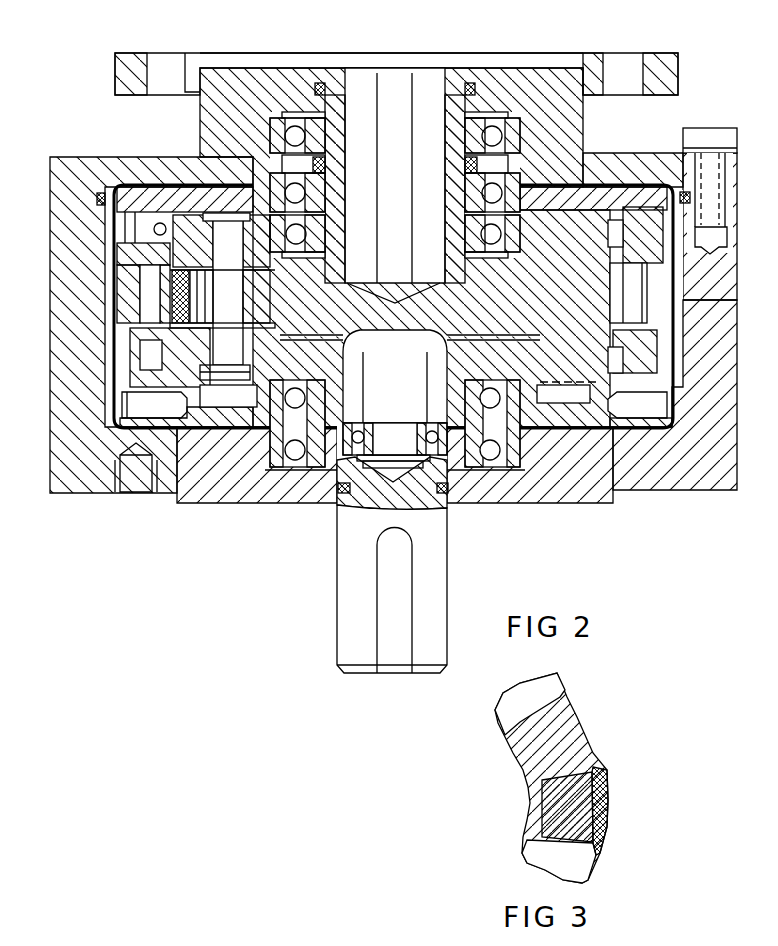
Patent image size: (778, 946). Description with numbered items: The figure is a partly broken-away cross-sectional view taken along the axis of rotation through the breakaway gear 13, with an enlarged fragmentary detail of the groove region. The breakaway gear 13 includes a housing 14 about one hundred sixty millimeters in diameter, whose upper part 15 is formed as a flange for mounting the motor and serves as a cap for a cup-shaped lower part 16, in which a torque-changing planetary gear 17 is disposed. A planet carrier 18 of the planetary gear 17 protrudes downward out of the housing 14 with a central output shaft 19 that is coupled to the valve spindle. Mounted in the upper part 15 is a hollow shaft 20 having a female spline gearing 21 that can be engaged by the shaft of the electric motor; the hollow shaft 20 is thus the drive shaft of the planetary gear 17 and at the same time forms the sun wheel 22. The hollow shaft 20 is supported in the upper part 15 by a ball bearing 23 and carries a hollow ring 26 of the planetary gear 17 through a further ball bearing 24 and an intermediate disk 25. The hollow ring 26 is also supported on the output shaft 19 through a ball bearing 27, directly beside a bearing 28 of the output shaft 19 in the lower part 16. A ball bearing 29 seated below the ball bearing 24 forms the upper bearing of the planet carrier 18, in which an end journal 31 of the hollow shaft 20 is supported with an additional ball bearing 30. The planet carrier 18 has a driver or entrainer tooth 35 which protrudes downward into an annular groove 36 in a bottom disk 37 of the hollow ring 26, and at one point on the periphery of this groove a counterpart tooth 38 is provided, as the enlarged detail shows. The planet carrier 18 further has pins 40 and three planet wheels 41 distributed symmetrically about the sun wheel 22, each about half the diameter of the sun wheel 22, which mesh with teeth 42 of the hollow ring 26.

In FIG. 2, the breakaway gear 13 is at (140, 63).
In FIG. 2, the housing 14 is at (667, 167).
In FIG. 2, the upper part 15 is at (588, 66).
In FIG. 2, the lower part 16 is at (693, 470).
In FIG. 2, the planetary gear 17 is at (93, 450).
In FIG. 2, the planet carrier 18 is at (338, 350).
In FIG. 2, the output shaft 19 is at (443, 583).
In FIG. 2, the hollow shaft 20 is at (452, 100).
In FIG. 2, the female spline gearing 21 is at (388, 90).
In FIG. 2, the sun wheel 22 is at (600, 300).
In FIG. 2, the ball bearing 23 is at (275, 128).
In FIG. 2, the ball bearing 24 is at (305, 96).
In FIG. 2, the intermediate disk 25 is at (223, 197).
In FIG. 2, the hollow ring 26 is at (155, 247).
In FIG. 2, the ball bearing 27 is at (230, 465).
In FIG. 2, the bearing 28 is at (510, 453).
In FIG. 2, the ball bearing 29 is at (270, 265).
In FIG. 2, the ball bearing 30 is at (352, 448).
In FIG. 2, the end journal 31 is at (340, 478).
In FIG. 2, the entrainer tooth 35 is at (563, 393).
In FIG. 3, the entrainer tooth 35 is at (588, 813).
In FIG. 2, the annular groove 36 is at (215, 400).
In FIG. 3, the annular groove 36 is at (552, 853).
In FIG. 3, the bottom disk 37 is at (596, 858).
In FIG. 3, the counterpart tooth 38 is at (578, 732).
In FIG. 2, the pins 40 is at (227, 247).
In FIG. 2, the planet wheels 41 is at (170, 297).
In FIG. 2, the teeth 42 is at (143, 315).